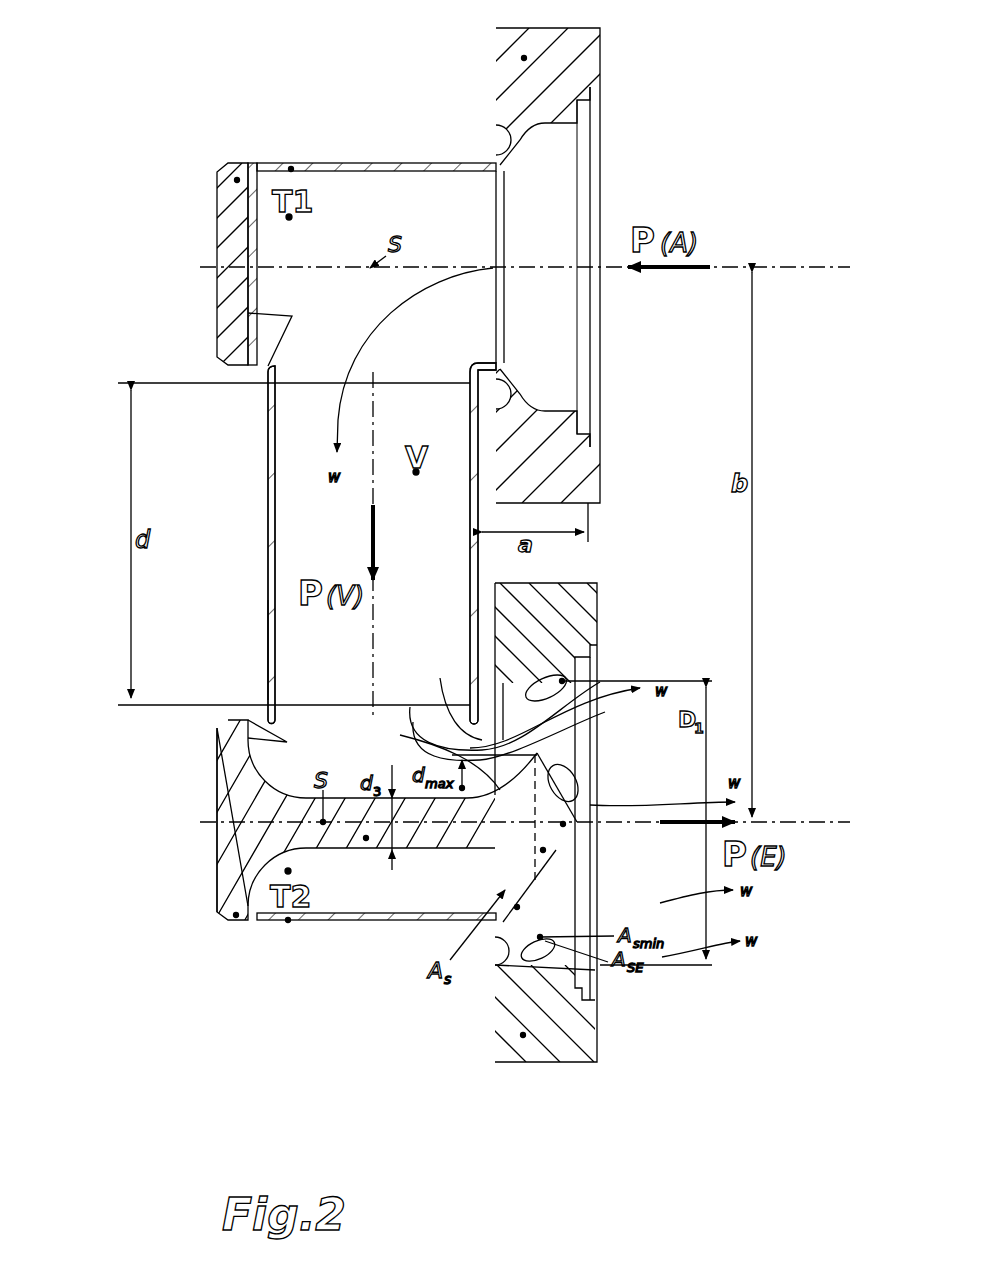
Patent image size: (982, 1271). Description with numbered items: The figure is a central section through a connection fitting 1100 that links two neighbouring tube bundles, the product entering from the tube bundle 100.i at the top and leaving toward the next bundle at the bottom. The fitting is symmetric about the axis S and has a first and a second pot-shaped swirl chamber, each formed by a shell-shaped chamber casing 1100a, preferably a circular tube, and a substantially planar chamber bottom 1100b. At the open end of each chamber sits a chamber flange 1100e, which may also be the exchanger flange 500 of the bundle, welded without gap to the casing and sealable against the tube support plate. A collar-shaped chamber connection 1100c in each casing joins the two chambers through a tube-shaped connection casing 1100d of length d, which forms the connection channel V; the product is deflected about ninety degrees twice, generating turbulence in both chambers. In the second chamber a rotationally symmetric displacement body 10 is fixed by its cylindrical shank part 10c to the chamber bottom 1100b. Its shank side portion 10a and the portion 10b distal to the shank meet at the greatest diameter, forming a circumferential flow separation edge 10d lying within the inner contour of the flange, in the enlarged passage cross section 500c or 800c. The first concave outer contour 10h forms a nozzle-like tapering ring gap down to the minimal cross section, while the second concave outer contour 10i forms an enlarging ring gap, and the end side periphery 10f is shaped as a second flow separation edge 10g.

The connection fitting 1100 is at (262, 436).
The chamber casing 1100a is at (291, 169).
The chamber bottom 1100b is at (237, 180).
The chamber connection 1100c is at (292, 316).
The connection casing 1100d is at (268, 634).
The chamber flange 1100e is at (524, 58).
The exchanger flange 500 is at (435, 9).
The enlarged passage cross section 500c is at (674, 648).
The enlarged passage cross section 800c is at (686, 662).
The displacement body 10 is at (517, 907).
The shank side portion 10a is at (543, 850).
The portion distal to the shank 10b is at (500, 920).
The shank part 10c is at (366, 838).
The flow separation edge 10d is at (537, 753).
The end side periphery 10f is at (577, 822).
The second circumferential flow separation edge 10g is at (555, 800).
The first concave outer contour 10h is at (510, 850).
The second concave outer contour 10i is at (563, 824).
The tube bundle 100.i is at (796, 279).